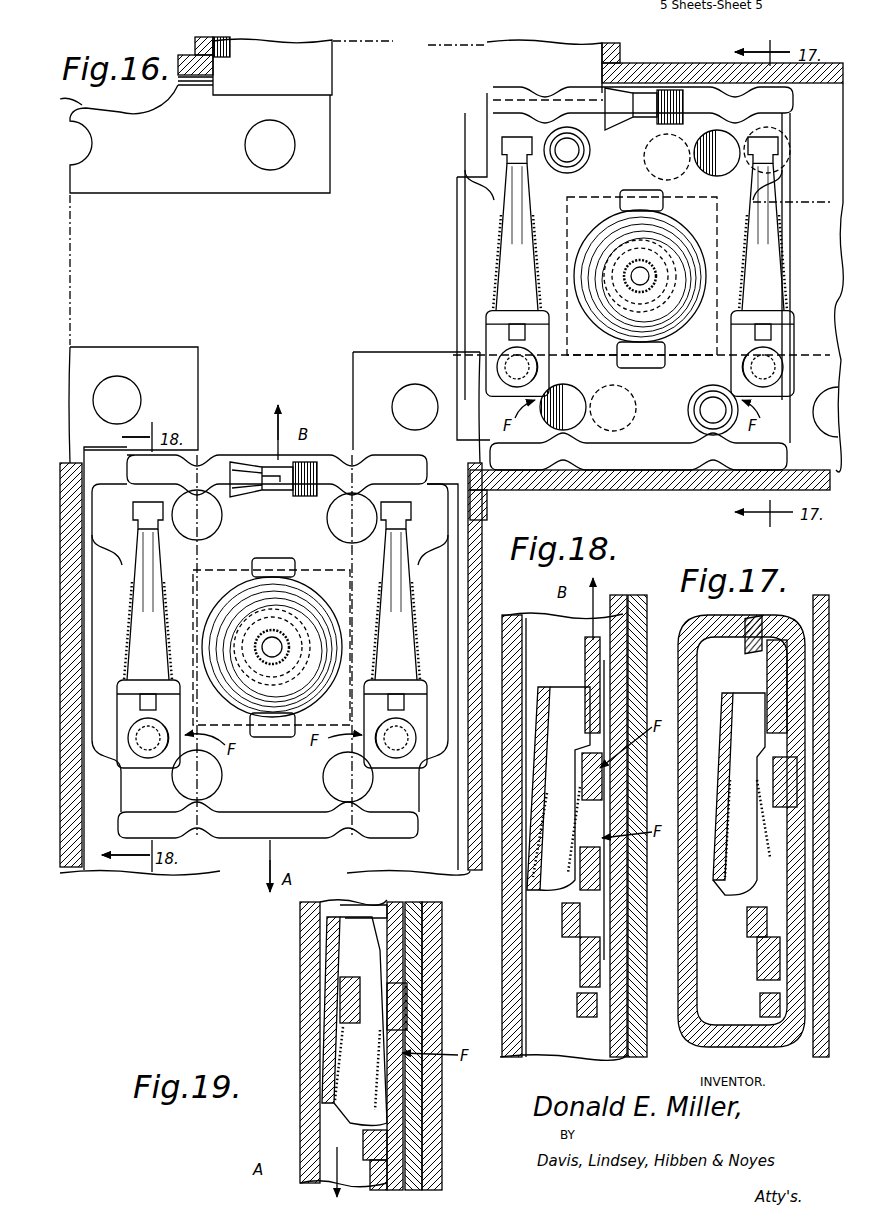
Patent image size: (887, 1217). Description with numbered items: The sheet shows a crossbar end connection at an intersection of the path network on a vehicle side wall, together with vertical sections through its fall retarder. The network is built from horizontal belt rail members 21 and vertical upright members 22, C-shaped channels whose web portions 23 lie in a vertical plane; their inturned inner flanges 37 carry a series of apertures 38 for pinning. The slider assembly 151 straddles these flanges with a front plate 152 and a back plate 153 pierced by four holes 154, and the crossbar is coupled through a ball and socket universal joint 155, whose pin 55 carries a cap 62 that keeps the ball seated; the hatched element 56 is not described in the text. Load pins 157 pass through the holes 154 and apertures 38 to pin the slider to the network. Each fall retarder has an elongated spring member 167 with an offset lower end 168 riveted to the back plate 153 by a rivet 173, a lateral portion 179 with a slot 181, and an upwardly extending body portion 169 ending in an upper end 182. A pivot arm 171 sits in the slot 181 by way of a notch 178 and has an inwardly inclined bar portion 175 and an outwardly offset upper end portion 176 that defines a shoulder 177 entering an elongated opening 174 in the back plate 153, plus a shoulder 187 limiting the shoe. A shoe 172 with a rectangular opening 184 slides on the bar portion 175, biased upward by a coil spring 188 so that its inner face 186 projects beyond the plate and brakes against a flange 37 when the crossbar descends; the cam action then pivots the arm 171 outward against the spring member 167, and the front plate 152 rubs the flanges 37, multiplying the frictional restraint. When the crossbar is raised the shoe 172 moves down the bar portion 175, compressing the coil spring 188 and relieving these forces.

In FIG. 16, the belt rail member 21 is at (108, 198).
In FIG. 17, the belt rail member 21 is at (690, 1042).
In FIG. 16, the upright member 22 is at (333, 65).
In FIG. 18, the upright member 22 is at (552, 1058).
In FIG. 19, the upright member 22 is at (298, 1143).
In FIG. 16, the web portion 23 is at (423, 50).
In FIG. 18, the web portion 23 is at (612, 702).
In FIG. 16, the inner flange 37 is at (300, 80).
In FIG. 18, the inner flange 37 is at (610, 1034).
In FIG. 17, the inner flange 37 is at (757, 826).
In FIG. 19, the inner flange 37 is at (410, 1128).
In FIG. 16, the aperture 38 is at (258, 145).
In FIG. 16, the pin 55 is at (630, 285).
In FIG. 16, the latch pin 56 is at (283, 490).
In FIG. 16, the cap 62 is at (595, 248).
In FIG. 16, the slider assembly 151 is at (245, 462).
In FIG. 18, the front plate 152 is at (652, 975).
In FIG. 17, the front plate 152 is at (810, 1040).
In FIG. 19, the front plate 152 is at (443, 923).
In FIG. 16, the back plate 153 is at (258, 845).
In FIG. 18, the back plate 153 is at (578, 985).
In FIG. 17, the back plate 153 is at (760, 975).
In FIG. 19, the back plate 153 is at (378, 905).
In FIG. 16, the hole 154 is at (215, 520).
In FIG. 16, the universal joint 155 is at (258, 600).
In FIG. 16, the load pin 157 is at (563, 126).
In FIG. 16, the spring member 167 is at (118, 552).
In FIG. 18, the spring member 167 is at (549, 712).
In FIG. 17, the spring member 167 is at (728, 715).
In FIG. 19, the spring member 167 is at (330, 1005).
In FIG. 16, the offset lower end 168 is at (190, 600).
In FIG. 18, the offset lower end 168 is at (578, 962).
In FIG. 17, the offset lower end 168 is at (755, 958).
In FIG. 19, the offset lower end 168 is at (340, 1172).
In FIG. 18, the body portion 169 is at (522, 648).
In FIG. 17, the body portion 169 is at (764, 792).
In FIG. 19, the body portion 169 is at (330, 938).
In FIG. 18, the pivot arm 171 is at (593, 784).
In FIG. 17, the pivot arm 171 is at (745, 672).
In FIG. 19, the pivot arm 171 is at (340, 1030).
In FIG. 16, the shoe 172 is at (358, 598).
In FIG. 18, the shoe 172 is at (605, 766).
In FIG. 17, the shoe 172 is at (777, 838).
In FIG. 19, the shoe 172 is at (405, 978).
In FIG. 16, the rivet 173 is at (128, 752).
In FIG. 18, the rivet 173 is at (565, 925).
In FIG. 17, the rivet 173 is at (752, 938).
In FIG. 19, the rivet 173 is at (400, 1150).
In FIG. 16, the elongated opening 174 is at (185, 570).
In FIG. 18, the elongated opening 174 is at (600, 878).
In FIG. 17, the elongated opening 174 is at (775, 880).
In FIG. 19, the elongated opening 174 is at (405, 1105).
In FIG. 18, the bar portion 175 is at (600, 853).
In FIG. 17, the bar portion 175 is at (778, 862).
In FIG. 19, the bar portion 175 is at (405, 1085).
In FIG. 18, the upper end portion 176 is at (571, 690).
In FIG. 17, the upper end portion 176 is at (748, 680).
In FIG. 19, the upper end portion 176 is at (355, 898).
In FIG. 18, the shoulder 177 is at (603, 690).
In FIG. 17, the shoulder 177 is at (782, 725).
In FIG. 19, the shoulder 177 is at (340, 958).
In FIG. 18, the notch 178 is at (540, 862).
In FIG. 17, the notch 178 is at (726, 862).
In FIG. 19, the notch 178 is at (340, 1120).
In FIG. 18, the lateral portion 179 is at (560, 892).
In FIG. 17, the lateral portion 179 is at (740, 897).
In FIG. 19, the lateral portion 179 is at (330, 1105).
In FIG. 16, the slot 181 is at (185, 705).
In FIG. 18, the slot 181 is at (582, 905).
In FIG. 17, the slot 181 is at (752, 920).
In FIG. 18, the upper end 182 is at (535, 720).
In FIG. 17, the upper end 182 is at (745, 695).
In FIG. 19, the upper end 182 is at (330, 915).
In FIG. 18, the rectangular opening 184 is at (595, 785).
In FIG. 17, the rectangular opening 184 is at (797, 765).
In FIG. 19, the rectangular opening 184 is at (407, 1000).
In FIG. 18, the inner face 186 is at (603, 808).
In FIG. 17, the inner face 186 is at (745, 760).
In FIG. 19, the inner face 186 is at (405, 1018).
In FIG. 18, the shoulder 187 is at (570, 752).
In FIG. 17, the shoulder 187 is at (759, 680).
In FIG. 19, the shoulder 187 is at (340, 985).
In FIG. 16, the coil spring 188 is at (495, 268).
In FIG. 18, the coil spring 188 is at (548, 835).
In FIG. 17, the coil spring 188 is at (735, 806).
In FIG. 19, the coil spring 188 is at (340, 1050).